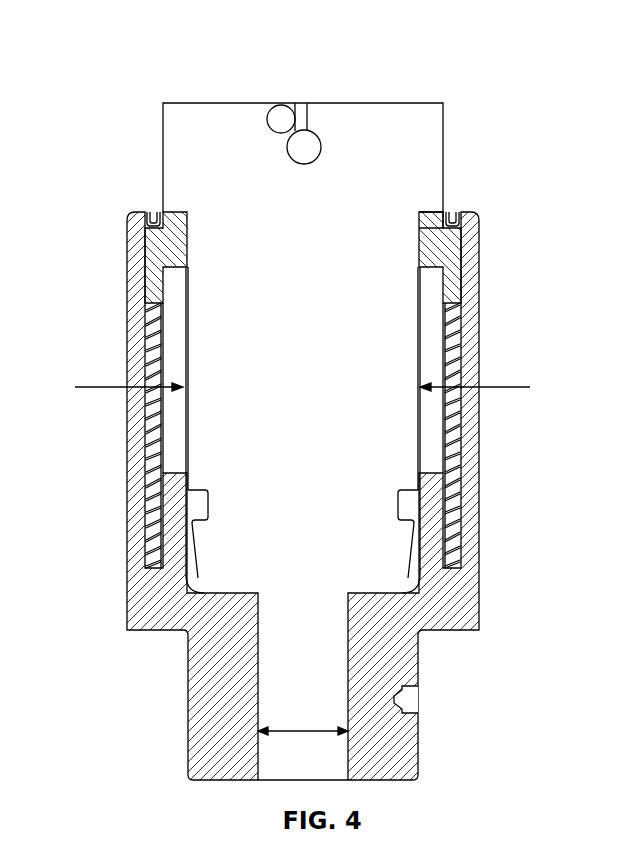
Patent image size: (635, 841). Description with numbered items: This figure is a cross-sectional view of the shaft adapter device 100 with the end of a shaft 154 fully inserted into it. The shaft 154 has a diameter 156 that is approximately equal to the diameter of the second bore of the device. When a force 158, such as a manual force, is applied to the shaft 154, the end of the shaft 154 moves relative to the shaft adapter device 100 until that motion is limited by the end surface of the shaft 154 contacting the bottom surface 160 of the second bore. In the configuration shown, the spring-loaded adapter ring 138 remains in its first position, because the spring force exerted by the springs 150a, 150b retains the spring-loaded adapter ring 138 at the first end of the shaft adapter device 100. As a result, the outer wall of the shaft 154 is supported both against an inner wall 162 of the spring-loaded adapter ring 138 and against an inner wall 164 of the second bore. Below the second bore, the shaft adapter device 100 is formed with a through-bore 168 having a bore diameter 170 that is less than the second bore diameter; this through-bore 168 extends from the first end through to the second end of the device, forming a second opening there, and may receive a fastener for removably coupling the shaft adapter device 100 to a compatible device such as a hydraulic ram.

The shaft adapter device 100 is at (309, 412).
The spring-loaded adapter ring 138 is at (440, 258).
The spring 150a is at (453, 338).
The spring 150b is at (150, 363).
The shaft 154 is at (130, 93).
The diameter 156 is at (508, 388).
The force 158 is at (300, 103).
The bottom surface 160 is at (383, 594).
The inner wall 162 is at (425, 250).
The inner wall 164 is at (420, 535).
The through-bore 168 is at (205, 512).
The bore diameter 170 is at (310, 727).